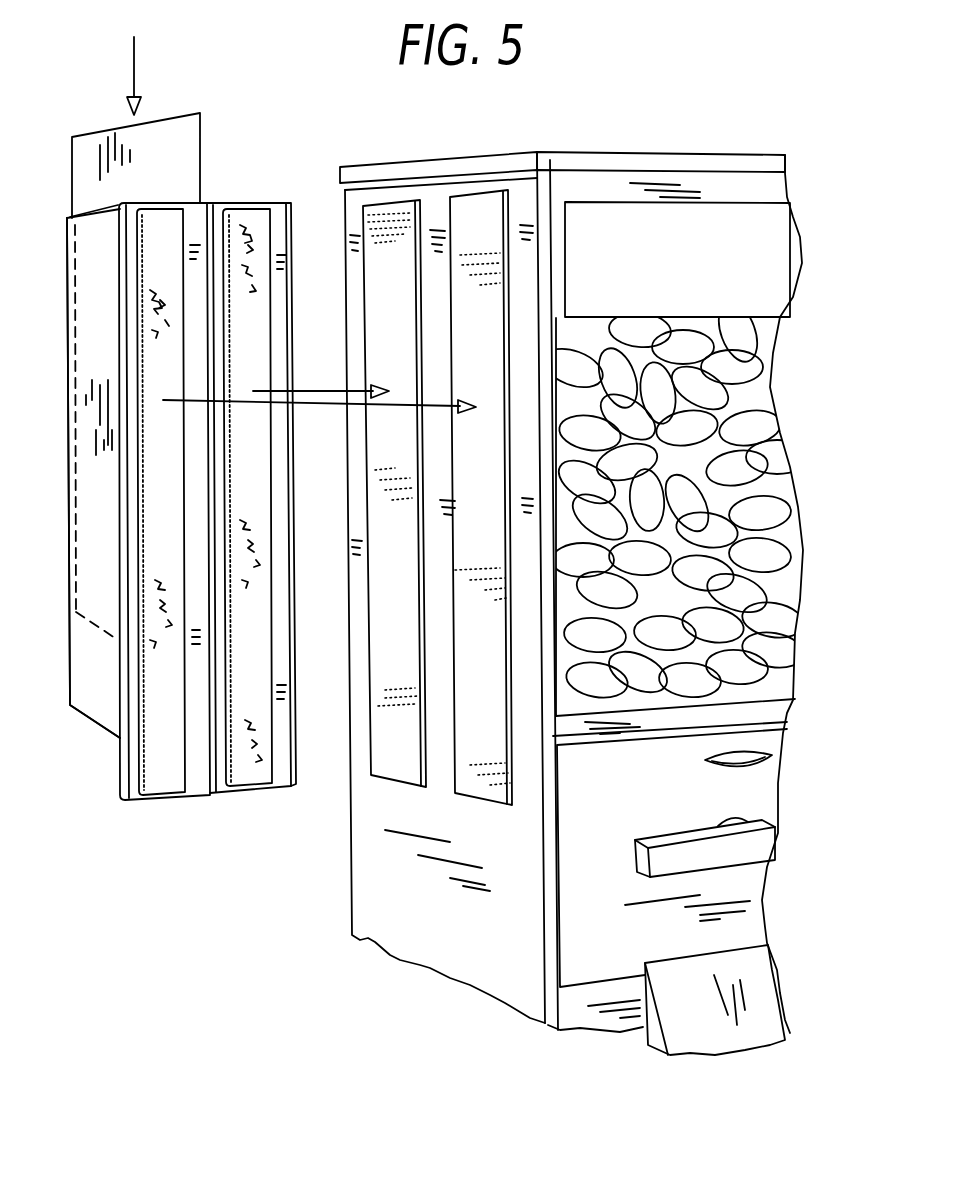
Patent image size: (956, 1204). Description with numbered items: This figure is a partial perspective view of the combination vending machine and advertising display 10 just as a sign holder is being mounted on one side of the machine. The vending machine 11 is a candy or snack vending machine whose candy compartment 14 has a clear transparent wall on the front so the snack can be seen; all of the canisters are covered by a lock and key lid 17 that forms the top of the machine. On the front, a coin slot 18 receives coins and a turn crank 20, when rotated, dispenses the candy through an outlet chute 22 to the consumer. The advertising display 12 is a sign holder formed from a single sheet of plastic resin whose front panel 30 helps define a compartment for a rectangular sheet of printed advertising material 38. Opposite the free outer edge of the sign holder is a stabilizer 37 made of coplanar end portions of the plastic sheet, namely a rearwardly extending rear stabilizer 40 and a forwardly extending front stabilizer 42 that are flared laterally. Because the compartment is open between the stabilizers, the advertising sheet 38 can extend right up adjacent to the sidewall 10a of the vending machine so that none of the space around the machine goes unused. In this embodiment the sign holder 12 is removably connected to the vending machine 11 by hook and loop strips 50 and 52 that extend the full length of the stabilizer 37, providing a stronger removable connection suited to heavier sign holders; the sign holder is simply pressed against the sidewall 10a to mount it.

The combination vending machine and advertising display 10 is at (675, 130).
The sidewall surface of the vending machine 10a is at (422, 945).
The vending machine 11 is at (585, 150).
The advertising display (sign holder) 12 is at (64, 399).
The compartment (candy canister) 14 is at (740, 612).
The lock and key lid 17 is at (735, 165).
The coin slot 18 is at (705, 757).
The turn crank 20 is at (668, 855).
The outlet chute 22 is at (752, 983).
The front panel 30 is at (92, 685).
The stabilizer 37 is at (293, 812).
The printed advertising material sheet 38 is at (173, 155).
The rear stabilizer portion 40 is at (280, 790).
The front stabilizer portion 42 is at (148, 803).
The hook and loop strip 50 is at (253, 497).
The hook and loop strip 52 is at (492, 583).